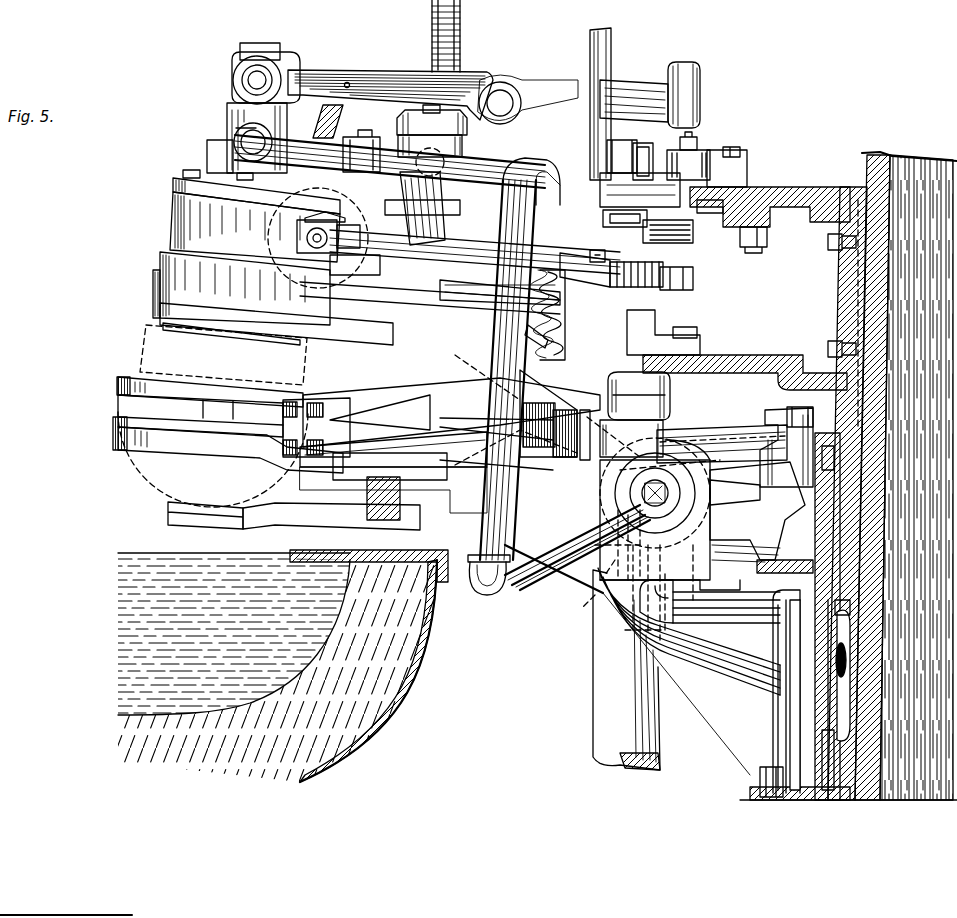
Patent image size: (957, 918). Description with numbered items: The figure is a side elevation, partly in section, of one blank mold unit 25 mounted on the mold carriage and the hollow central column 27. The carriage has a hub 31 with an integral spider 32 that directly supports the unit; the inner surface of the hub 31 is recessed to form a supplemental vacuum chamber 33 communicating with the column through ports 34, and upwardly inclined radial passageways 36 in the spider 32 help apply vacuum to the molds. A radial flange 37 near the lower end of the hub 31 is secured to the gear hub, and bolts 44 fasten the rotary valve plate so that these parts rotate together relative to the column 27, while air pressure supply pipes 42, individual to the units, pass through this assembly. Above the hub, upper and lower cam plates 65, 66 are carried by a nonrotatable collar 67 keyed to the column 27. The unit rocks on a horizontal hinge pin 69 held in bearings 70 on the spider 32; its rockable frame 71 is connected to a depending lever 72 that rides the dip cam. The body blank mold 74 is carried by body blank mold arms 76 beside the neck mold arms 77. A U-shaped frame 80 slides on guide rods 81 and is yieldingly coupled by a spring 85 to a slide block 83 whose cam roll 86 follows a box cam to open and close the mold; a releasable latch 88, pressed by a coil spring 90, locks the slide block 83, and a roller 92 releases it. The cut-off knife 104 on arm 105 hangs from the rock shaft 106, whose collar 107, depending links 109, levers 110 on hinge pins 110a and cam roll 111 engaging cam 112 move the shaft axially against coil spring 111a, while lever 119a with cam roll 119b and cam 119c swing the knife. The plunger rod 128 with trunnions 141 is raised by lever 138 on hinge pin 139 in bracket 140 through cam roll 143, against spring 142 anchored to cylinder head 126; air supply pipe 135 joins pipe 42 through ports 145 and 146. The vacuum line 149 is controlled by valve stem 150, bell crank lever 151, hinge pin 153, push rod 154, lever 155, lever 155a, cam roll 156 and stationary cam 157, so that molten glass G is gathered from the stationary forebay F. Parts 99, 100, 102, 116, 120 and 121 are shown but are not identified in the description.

The blank mold unit 25 is at (259, 296).
The central column 27 is at (860, 714).
The hub 31 is at (783, 707).
The spider 32 is at (770, 568).
The supplemental vacuum chamber 33 is at (840, 700).
The ports 34 is at (858, 620).
The radial passageways 36 is at (710, 665).
The radial flange 37 is at (755, 790).
The air pressure supply pipe 42 is at (775, 730).
The bolts 44 is at (768, 778).
The upper cam plate 65 is at (808, 198).
The lower cam plate 66 is at (756, 367).
The collar 67 is at (845, 272).
The hinge pin 69 is at (640, 485).
The bearings 70 is at (680, 465).
The rockable frame 71 is at (723, 482).
The lever 72 is at (610, 692).
The body blank mold 74 is at (155, 350).
The body blank mold arms 76 is at (118, 392).
The neck mold arms 77 is at (283, 318).
The U-shaped frame 80 is at (450, 422).
The guide rods 81 is at (722, 452).
The slide block 83 is at (603, 418).
The spring 85 is at (560, 445).
The cam roll 86 is at (662, 392).
The releasable latch 88 is at (750, 445).
The coil spring 90 is at (785, 430).
The roller 92 is at (805, 416).
The pin 99 is at (358, 144).
The nut 100 is at (625, 168).
The sleeve 102 is at (645, 172).
The cut-off knife 104 is at (283, 510).
The arm 105 is at (299, 512).
The rock shaft 106 is at (460, 20).
The collar 107 is at (397, 145).
The depending links 109 is at (422, 208).
The levers 110 is at (495, 292).
The hinge pins 110a is at (552, 312).
The cam roll 111 is at (680, 295).
The coil spring 111a is at (535, 335).
The cam 112 is at (660, 320).
The block 116 is at (440, 110).
The lever 119a is at (647, 218).
The cam roll 119b is at (660, 245).
The cam 119c is at (748, 240).
The rail 120 is at (228, 192).
The block 121 is at (173, 215).
The cylinder head 126 is at (210, 156).
The plunger rod 128 is at (268, 58).
The air supply pipe 135 is at (240, 133).
The lever 138 is at (555, 95).
The hinge pin 139 is at (502, 92).
The bracket 140 is at (520, 148).
The trunnions 141 is at (235, 78).
The spring 142 is at (327, 103).
The cam roll 143 is at (700, 86).
The ports 145 is at (580, 596).
The ports 146 is at (712, 488).
The vacuum line 149 is at (543, 390).
The valve stem 150 is at (296, 237).
The bell crank lever 151 is at (305, 222).
The hinge pin 153 is at (357, 268).
The push rod 154 is at (485, 256).
The lever 155 is at (593, 250).
The lever 155a is at (690, 140).
The cam roll 156 is at (695, 160).
The cam 157 is at (712, 172).
The supply body of glass G is at (145, 556).
The forebay F is at (388, 662).